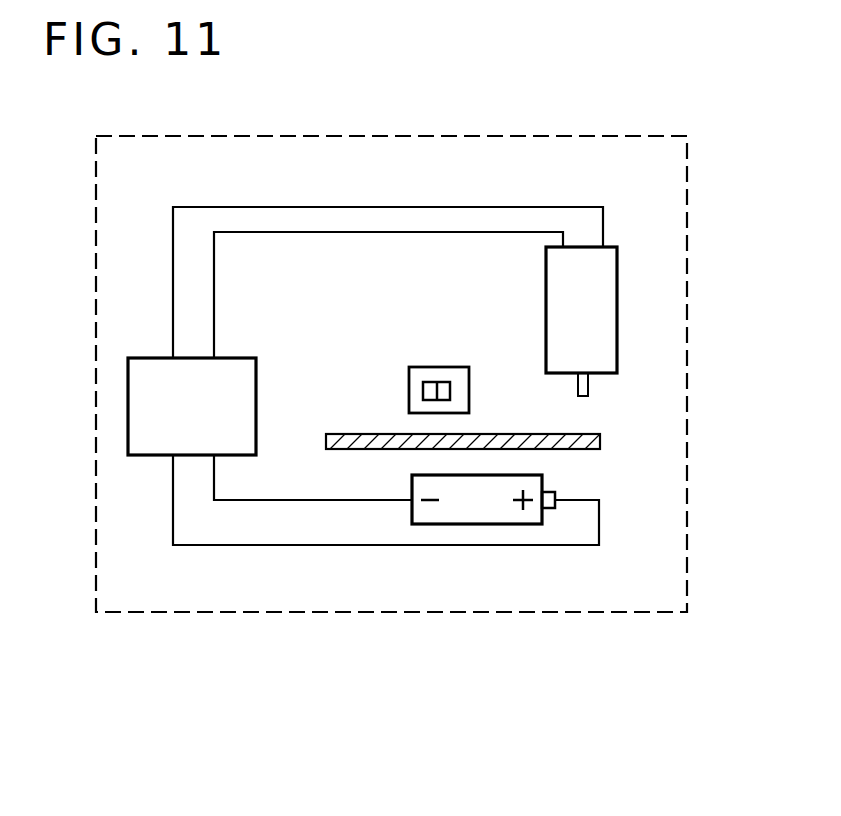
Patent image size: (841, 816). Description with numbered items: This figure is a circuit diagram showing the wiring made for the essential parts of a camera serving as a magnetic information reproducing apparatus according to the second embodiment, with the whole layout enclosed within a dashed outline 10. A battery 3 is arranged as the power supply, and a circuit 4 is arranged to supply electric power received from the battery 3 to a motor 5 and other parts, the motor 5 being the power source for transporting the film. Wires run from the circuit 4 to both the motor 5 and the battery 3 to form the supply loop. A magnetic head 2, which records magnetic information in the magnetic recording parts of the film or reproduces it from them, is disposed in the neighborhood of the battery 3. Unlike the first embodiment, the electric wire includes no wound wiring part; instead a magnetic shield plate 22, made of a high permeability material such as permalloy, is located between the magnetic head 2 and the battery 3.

The housing / device enclosure 10 is at (688, 545).
The circuit 4 is at (256, 387).
The motor 5 is at (617, 288).
The magnetic head 2 is at (434, 367).
The magnetic shield plate 22 is at (600, 434).
The battery 3 is at (542, 477).